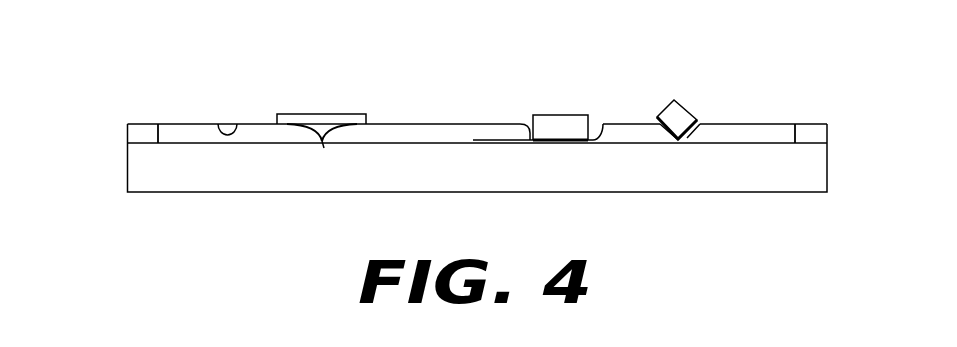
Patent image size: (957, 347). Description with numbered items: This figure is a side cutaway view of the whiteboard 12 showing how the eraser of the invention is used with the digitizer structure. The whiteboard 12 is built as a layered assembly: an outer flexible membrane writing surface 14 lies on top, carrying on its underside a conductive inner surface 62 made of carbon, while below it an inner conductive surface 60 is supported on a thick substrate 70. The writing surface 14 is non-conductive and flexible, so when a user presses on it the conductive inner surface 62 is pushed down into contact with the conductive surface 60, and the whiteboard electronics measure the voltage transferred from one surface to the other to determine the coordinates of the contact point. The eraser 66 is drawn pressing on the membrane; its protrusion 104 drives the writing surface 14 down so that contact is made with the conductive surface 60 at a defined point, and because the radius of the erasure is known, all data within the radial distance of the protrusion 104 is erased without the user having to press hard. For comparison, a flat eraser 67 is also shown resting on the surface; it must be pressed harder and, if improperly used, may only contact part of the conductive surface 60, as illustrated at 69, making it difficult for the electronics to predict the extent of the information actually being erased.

The whiteboard 12 is at (90, 111).
The outer flexible membrane writing surface 14 is at (415, 122).
The inner conductive surface 60 is at (474, 140).
The conductive inner surface of writing surface 62 is at (218, 124).
The eraser 66 is at (322, 114).
The flat eraser 67 is at (558, 115).
The partial contact region 69 is at (676, 101).
The substrate 70 is at (220, 172).
The protrusion 104 is at (323, 145).